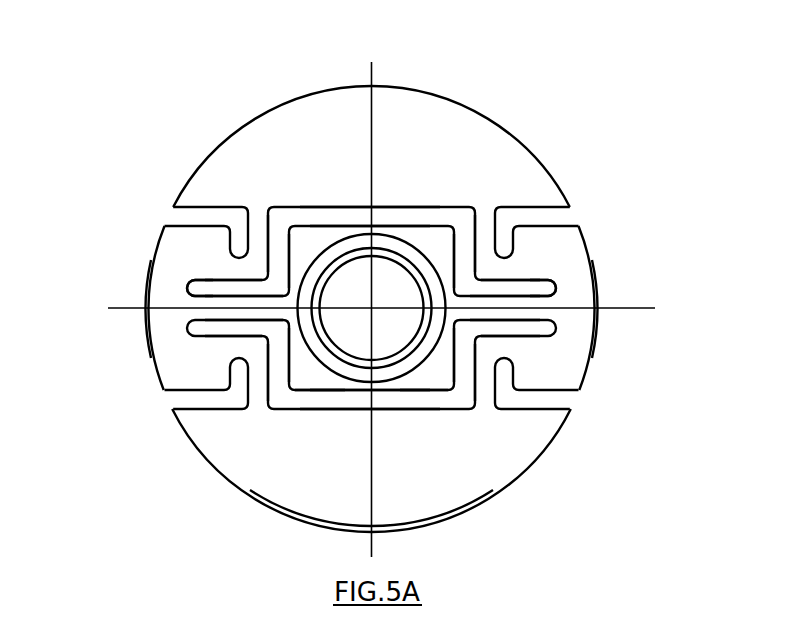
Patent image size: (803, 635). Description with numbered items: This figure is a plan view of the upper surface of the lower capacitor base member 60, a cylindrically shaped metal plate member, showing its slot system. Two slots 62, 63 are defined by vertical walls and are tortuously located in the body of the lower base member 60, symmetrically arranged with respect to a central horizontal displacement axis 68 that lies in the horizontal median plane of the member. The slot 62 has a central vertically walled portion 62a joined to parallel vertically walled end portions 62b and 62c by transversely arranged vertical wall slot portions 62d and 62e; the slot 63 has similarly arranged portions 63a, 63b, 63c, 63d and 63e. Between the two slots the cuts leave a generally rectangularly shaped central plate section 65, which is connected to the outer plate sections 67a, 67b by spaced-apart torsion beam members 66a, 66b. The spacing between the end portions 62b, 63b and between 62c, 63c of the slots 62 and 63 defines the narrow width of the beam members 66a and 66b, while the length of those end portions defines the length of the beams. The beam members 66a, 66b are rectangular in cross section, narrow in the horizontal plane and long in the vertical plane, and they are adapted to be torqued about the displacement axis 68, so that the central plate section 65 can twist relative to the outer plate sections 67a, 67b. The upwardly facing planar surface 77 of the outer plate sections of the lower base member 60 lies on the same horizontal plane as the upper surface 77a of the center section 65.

The lower capacitor base member 60 is at (485, 115).
The slot 62 is at (388, 215).
The central vertically walled portion 62a is at (342, 215).
The vertically walled end portion 62b is at (507, 288).
The vertically walled end portion 62c is at (220, 287).
The transversely arranged vertical wall slot portion 62d is at (463, 242).
The transversely arranged vertical wall slot portion 62e is at (285, 252).
The slot 63 is at (283, 400).
The central vertically walled portion 63a is at (427, 402).
The vertically walled end portion 63b is at (540, 332).
The vertically walled end portion 63c is at (217, 333).
The transversely arranged vertical wall slot portion 63d is at (465, 367).
The transversely arranged vertical wall slot portion 63e is at (350, 402).
The central plate section 65 is at (453, 386).
The torsion beam member 66a is at (543, 304).
The torsion beam member 66b is at (188, 307).
The outer plate section 67a is at (580, 298).
The outer plate section 67b is at (168, 335).
The displacement axis 68 is at (633, 308).
The upwardly facing planar surface 77 is at (358, 497).
The upper surface 77a is at (342, 388).